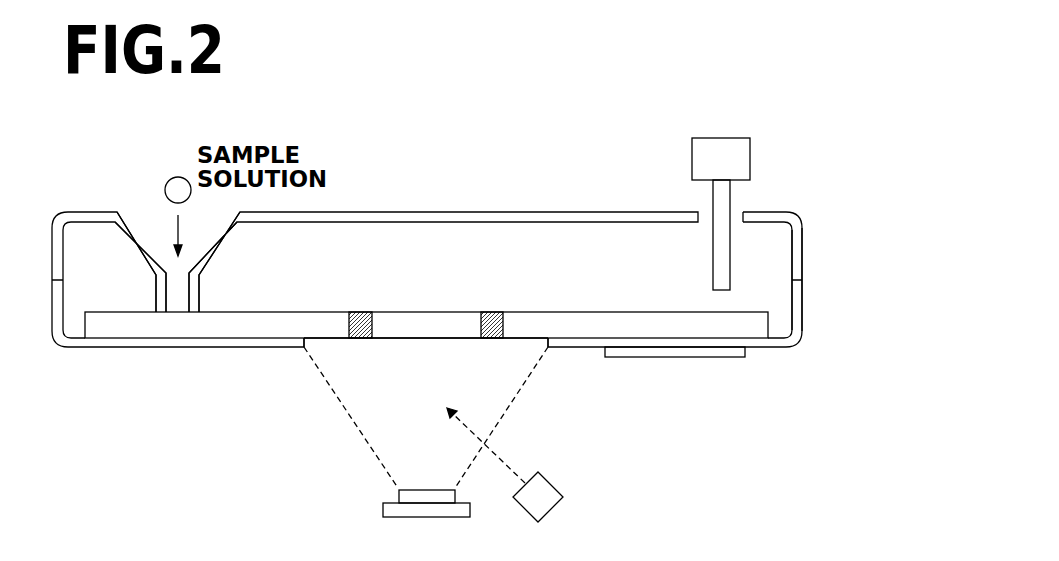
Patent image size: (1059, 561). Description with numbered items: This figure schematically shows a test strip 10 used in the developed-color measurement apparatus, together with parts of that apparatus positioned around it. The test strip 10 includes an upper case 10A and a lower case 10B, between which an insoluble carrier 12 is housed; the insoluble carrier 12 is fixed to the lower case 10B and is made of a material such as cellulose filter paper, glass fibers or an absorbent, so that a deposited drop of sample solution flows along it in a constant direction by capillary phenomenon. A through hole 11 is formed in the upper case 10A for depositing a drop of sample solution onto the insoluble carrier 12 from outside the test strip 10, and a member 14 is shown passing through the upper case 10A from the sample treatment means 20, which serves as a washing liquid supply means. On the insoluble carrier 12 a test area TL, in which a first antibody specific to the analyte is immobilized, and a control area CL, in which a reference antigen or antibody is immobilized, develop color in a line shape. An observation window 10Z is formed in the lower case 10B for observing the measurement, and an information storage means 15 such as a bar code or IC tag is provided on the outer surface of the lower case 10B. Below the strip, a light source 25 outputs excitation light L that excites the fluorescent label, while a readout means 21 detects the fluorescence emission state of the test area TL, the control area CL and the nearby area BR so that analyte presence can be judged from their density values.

The test strip 10 is at (788, 204).
The upper case 10A is at (796, 253).
The lower case 10B is at (796, 292).
The observation window 10Z is at (547, 343).
The through hole 11 is at (137, 231).
The insoluble carrier 12 is at (172, 325).
The probe / pressing member 14 is at (702, 218).
The information storage means 15 is at (675, 358).
The sample treatment means 20 is at (718, 150).
The readout means 21 is at (427, 497).
The light source 25 is at (550, 483).
The test area TL is at (360, 312).
The control area CL is at (490, 312).
The area in the vicinity of test area BR is at (395, 342).
The excitation light L is at (482, 431).